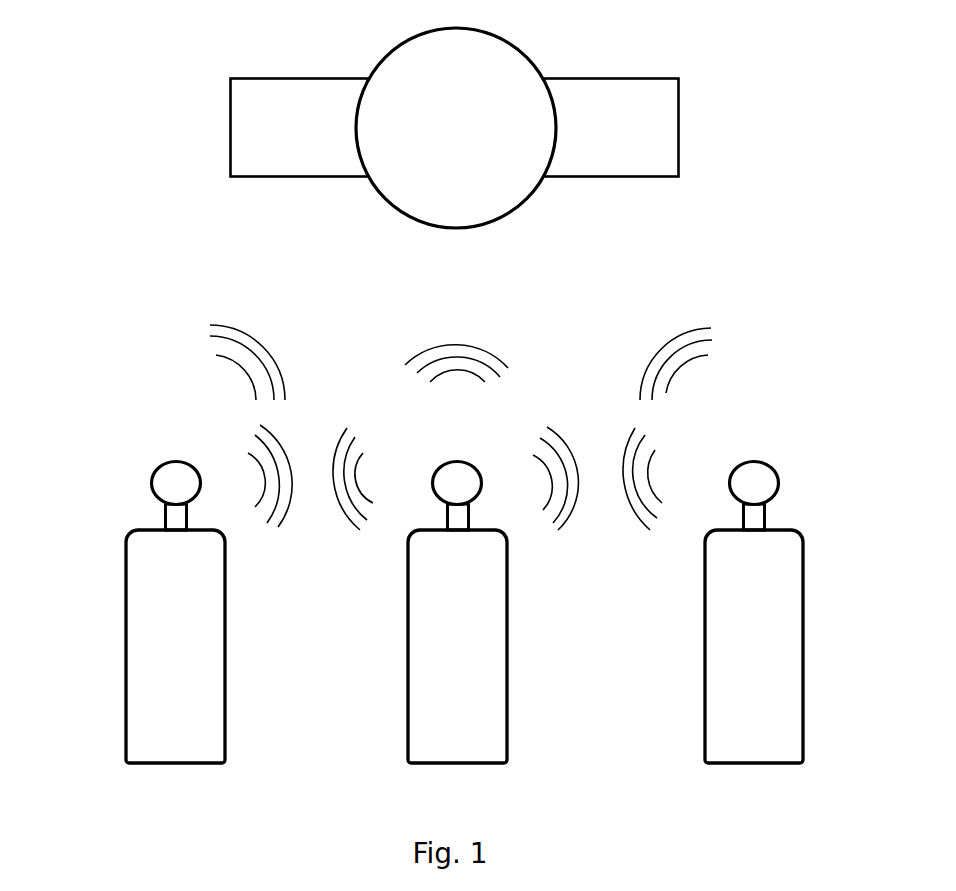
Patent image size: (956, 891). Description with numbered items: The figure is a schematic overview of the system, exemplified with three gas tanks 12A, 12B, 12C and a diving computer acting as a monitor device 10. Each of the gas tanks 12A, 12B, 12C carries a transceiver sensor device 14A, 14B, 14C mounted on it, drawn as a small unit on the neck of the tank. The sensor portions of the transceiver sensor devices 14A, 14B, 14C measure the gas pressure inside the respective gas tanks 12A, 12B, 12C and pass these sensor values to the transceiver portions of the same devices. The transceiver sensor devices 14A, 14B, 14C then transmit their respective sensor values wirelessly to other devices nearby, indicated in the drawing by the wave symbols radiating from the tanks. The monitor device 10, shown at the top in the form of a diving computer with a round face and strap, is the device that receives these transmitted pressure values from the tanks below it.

The monitor device 10 is at (438, 147).
The gas tank 12A is at (149, 668).
The gas tank 12B is at (430, 668).
The gas tank 12C is at (727, 668).
The transceiver sensor device 14A is at (163, 505).
The transceiver sensor device 14B is at (443, 505).
The transceiver sensor device 14C is at (733, 503).